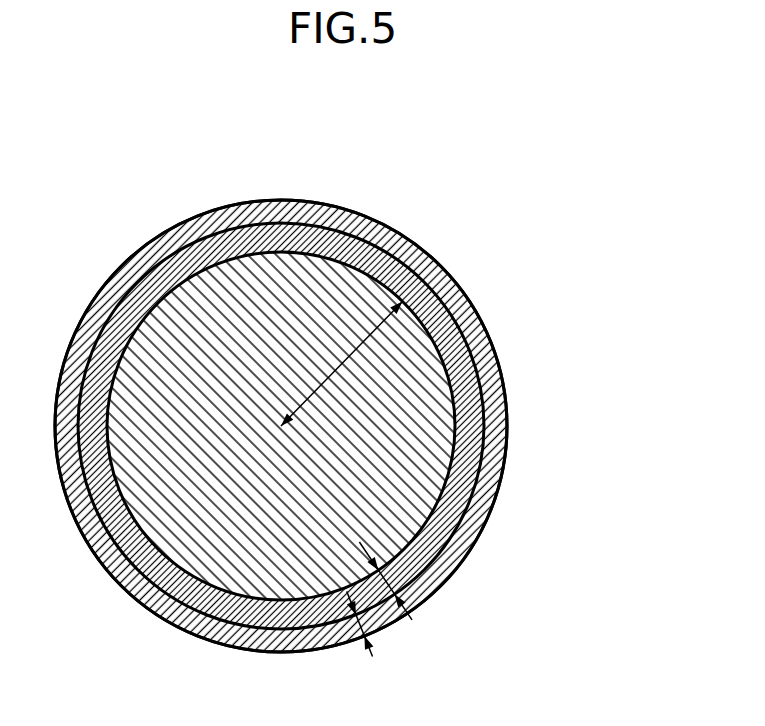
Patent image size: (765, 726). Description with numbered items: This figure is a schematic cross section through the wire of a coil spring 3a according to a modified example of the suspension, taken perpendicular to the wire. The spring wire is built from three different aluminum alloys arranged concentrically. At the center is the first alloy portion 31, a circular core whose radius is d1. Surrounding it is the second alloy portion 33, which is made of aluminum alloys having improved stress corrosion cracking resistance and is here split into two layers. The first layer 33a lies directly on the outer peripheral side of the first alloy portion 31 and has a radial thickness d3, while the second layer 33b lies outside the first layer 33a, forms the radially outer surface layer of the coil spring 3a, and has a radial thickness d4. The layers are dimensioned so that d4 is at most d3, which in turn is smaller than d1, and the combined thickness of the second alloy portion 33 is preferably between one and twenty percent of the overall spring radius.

The coil spring 3a is at (340, 170).
The first alloy portion 31 is at (433, 415).
The second alloy portion 33 is at (358, 426).
The first layer 33a is at (465, 470).
The second layer 33b is at (490, 453).
The radius of the first alloy portion d1 is at (372, 332).
The thickness of the first layer d3 is at (378, 582).
The thickness of the second layer d4 is at (350, 622).